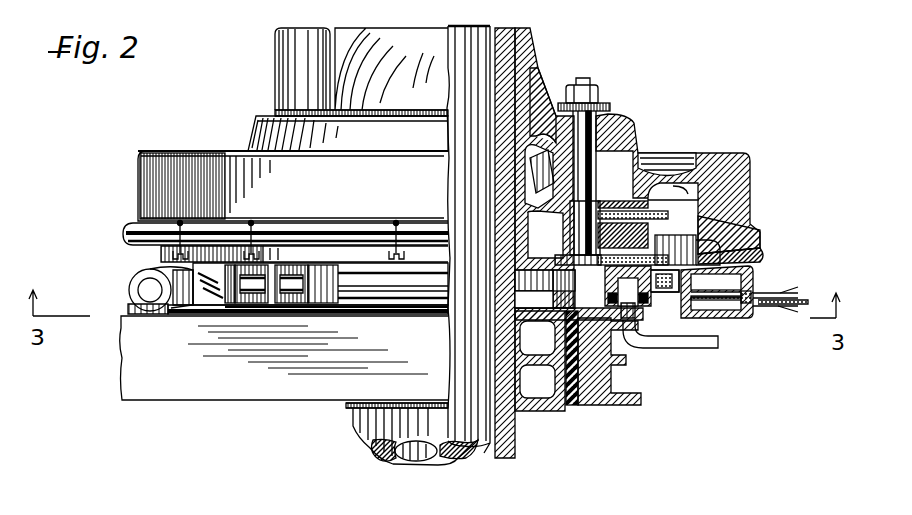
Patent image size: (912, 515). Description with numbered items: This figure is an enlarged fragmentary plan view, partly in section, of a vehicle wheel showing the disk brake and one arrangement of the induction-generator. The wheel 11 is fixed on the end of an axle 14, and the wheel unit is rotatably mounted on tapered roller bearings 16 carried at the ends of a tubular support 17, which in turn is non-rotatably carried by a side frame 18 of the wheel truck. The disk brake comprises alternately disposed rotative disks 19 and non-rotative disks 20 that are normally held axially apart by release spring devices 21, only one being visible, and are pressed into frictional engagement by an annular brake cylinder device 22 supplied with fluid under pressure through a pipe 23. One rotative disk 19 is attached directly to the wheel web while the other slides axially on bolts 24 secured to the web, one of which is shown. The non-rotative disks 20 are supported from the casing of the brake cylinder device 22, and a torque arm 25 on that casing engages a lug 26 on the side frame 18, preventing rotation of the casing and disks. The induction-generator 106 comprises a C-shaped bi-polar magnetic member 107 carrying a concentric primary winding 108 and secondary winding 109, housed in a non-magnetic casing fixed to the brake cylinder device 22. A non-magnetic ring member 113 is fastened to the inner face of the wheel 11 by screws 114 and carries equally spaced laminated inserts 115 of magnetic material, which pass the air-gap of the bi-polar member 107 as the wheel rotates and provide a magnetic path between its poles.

The wheel 11 is at (138, 156).
The axle 14 is at (423, 442).
The tapered roller bearing 16 is at (523, 132).
The tubular support 17 is at (500, 418).
The side frame 18 is at (237, 386).
The rotative disk 19 is at (613, 193).
The non-rotative disk 20 is at (655, 245).
The release spring device 21 is at (267, 48).
The annular brake cylinder device 22 is at (641, 311).
The pipe 23 is at (678, 335).
The bolt 24 is at (580, 120).
The torque arm 25 is at (140, 262).
The lug 26 is at (122, 297).
The induction-generator 106 is at (756, 277).
The bi-polar magnetic member 107 is at (742, 259).
The primary winding 108 is at (722, 296).
The secondary winding 109 is at (712, 302).
The ring member 113 is at (722, 230).
The screw 114 is at (384, 213).
The laminated insert 115 is at (735, 246).